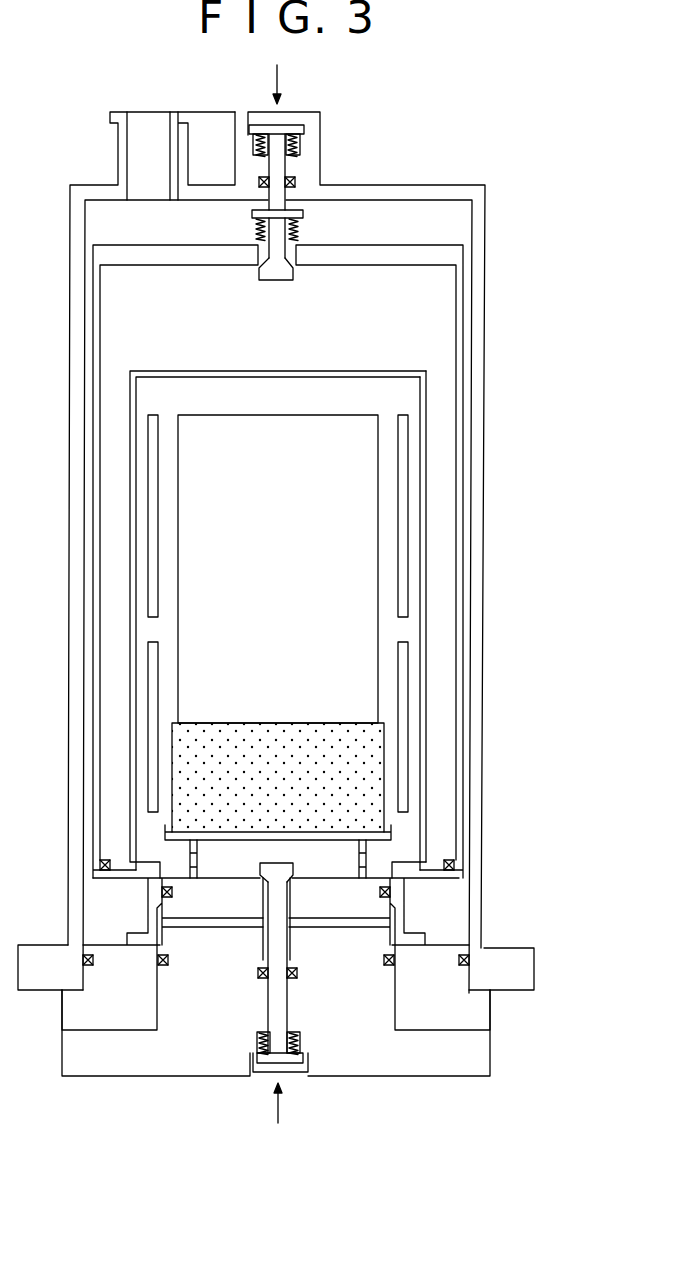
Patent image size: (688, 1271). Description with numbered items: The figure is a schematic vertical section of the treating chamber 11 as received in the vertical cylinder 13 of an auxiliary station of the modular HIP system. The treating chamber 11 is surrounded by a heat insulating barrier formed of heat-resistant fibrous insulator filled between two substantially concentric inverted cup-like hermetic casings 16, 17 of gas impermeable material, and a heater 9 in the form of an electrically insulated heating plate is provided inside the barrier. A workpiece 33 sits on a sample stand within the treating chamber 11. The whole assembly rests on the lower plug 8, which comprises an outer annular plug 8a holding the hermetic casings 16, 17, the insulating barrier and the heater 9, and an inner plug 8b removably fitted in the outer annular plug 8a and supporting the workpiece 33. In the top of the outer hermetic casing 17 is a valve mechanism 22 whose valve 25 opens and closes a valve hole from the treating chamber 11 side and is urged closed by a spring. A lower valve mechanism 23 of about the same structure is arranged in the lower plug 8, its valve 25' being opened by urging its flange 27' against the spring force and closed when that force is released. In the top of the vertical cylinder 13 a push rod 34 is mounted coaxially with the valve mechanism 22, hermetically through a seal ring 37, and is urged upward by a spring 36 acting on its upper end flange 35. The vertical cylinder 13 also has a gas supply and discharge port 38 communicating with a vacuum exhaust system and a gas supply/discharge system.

The lower plug 8 is at (198, 1030).
The outer annular plug 8a is at (492, 1017).
The inner plug 8b is at (492, 1060).
The heater 9 is at (407, 558).
The treating chamber 11 is at (402, 402).
The vertical cylinder 13 is at (485, 242).
The hermetic casing 16 is at (425, 682).
The hermetic casing 17 is at (463, 768).
The valve mechanism 22 is at (276, 235).
The lower valve mechanism 23 is at (275, 928).
The valve 25 is at (311, 283).
The valve 25' is at (245, 920).
The flange 27' is at (254, 1074).
The workpiece 33 is at (377, 632).
The push rod 34 is at (278, 167).
The upper end flange 35 is at (285, 130).
The spring 36 is at (298, 142).
The seal ring 37 is at (297, 182).
The gas supply and discharge port 38 is at (142, 142).